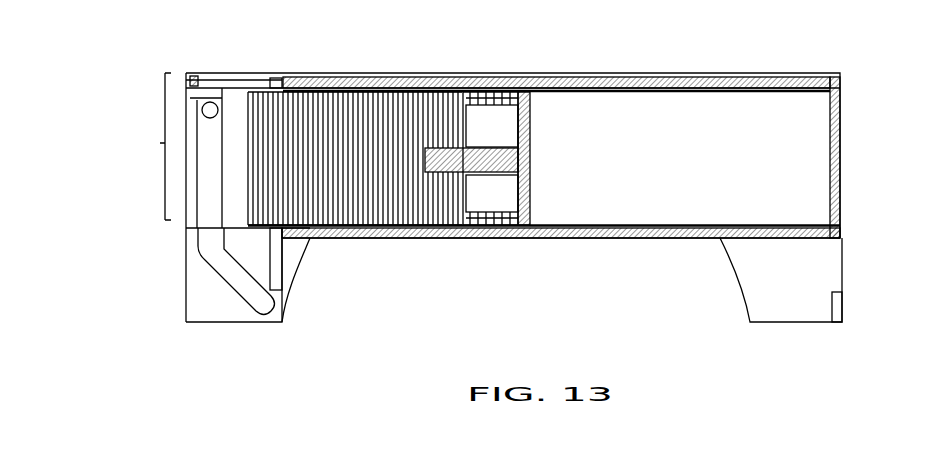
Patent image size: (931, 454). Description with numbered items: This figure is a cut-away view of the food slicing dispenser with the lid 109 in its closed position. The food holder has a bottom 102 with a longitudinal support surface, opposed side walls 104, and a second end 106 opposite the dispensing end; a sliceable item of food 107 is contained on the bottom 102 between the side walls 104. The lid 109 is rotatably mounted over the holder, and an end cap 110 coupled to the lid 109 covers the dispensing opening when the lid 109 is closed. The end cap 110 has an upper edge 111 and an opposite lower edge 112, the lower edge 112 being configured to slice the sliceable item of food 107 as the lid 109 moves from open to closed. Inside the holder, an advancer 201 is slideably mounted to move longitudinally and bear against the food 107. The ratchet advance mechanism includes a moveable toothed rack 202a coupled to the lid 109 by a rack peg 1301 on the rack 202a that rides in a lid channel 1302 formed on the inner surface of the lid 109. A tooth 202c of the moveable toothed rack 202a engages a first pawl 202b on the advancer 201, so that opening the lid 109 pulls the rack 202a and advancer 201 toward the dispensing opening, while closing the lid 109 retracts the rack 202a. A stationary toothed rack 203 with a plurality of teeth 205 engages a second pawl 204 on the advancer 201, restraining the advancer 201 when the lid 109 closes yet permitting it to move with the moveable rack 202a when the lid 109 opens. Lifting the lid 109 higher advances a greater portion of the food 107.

The bottom 102 is at (612, 228).
The side wall 104 is at (205, 302).
The second end 106 is at (163, 150).
The sliceable item of food 107 is at (713, 197).
The lid 109 is at (203, 40).
The end cap 110 is at (843, 150).
The upper edge 111 is at (843, 83).
The lower edge 112 is at (835, 220).
The advancer 201 is at (483, 220).
The moveable toothed rack 202a is at (427, 232).
The first pawl 202b is at (520, 135).
The tooth 202c is at (357, 228).
The stationary toothed rack 203 is at (365, 82).
The second pawl 204 is at (492, 88).
The tooth 205 is at (640, 88).
The rack peg 1301 is at (190, 98).
The lid channel 1302 is at (190, 248).